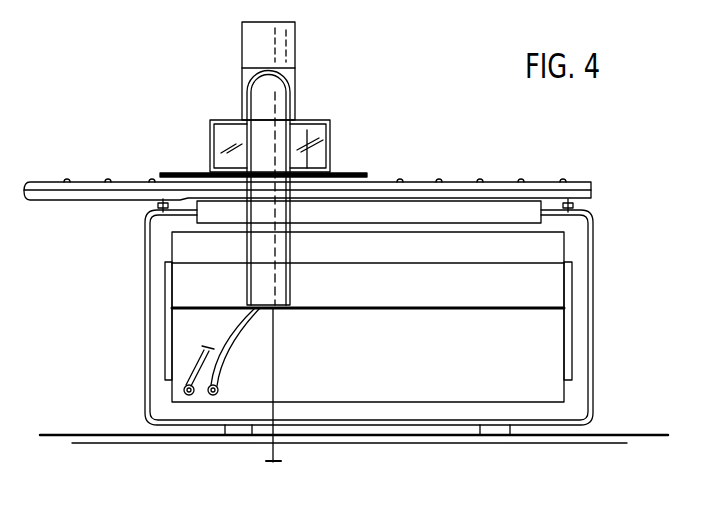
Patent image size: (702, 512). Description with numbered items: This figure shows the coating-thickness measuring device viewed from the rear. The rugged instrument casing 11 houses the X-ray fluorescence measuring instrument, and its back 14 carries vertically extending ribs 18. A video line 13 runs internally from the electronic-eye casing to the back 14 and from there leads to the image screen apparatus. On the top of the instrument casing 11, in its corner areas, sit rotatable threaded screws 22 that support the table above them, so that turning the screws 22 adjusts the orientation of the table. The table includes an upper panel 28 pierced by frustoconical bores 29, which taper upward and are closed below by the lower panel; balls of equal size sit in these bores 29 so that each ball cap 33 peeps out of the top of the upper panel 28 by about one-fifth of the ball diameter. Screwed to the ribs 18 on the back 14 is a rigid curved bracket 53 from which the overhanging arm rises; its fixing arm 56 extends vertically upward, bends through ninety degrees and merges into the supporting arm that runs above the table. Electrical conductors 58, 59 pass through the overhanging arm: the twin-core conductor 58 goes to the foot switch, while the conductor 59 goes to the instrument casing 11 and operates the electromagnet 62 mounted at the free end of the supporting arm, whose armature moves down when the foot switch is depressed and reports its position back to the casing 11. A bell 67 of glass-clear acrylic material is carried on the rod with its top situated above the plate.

The instrument casing 11 is at (580, 275).
The video line 13 is at (195, 368).
The back 14 is at (536, 348).
The ribs 18 is at (165, 328).
The threaded screws 22 is at (160, 210).
The upper panel 28 is at (84, 180).
The frustoconical bores 29 is at (80, 200).
The ball cap 33 is at (439, 182).
The curved bracket 53 is at (425, 297).
The fixing arm 56 is at (292, 290).
The conductor 58 is at (275, 384).
The conductor 59 is at (247, 331).
The electromagnet 62 is at (241, 49).
The bell 67 is at (210, 142).